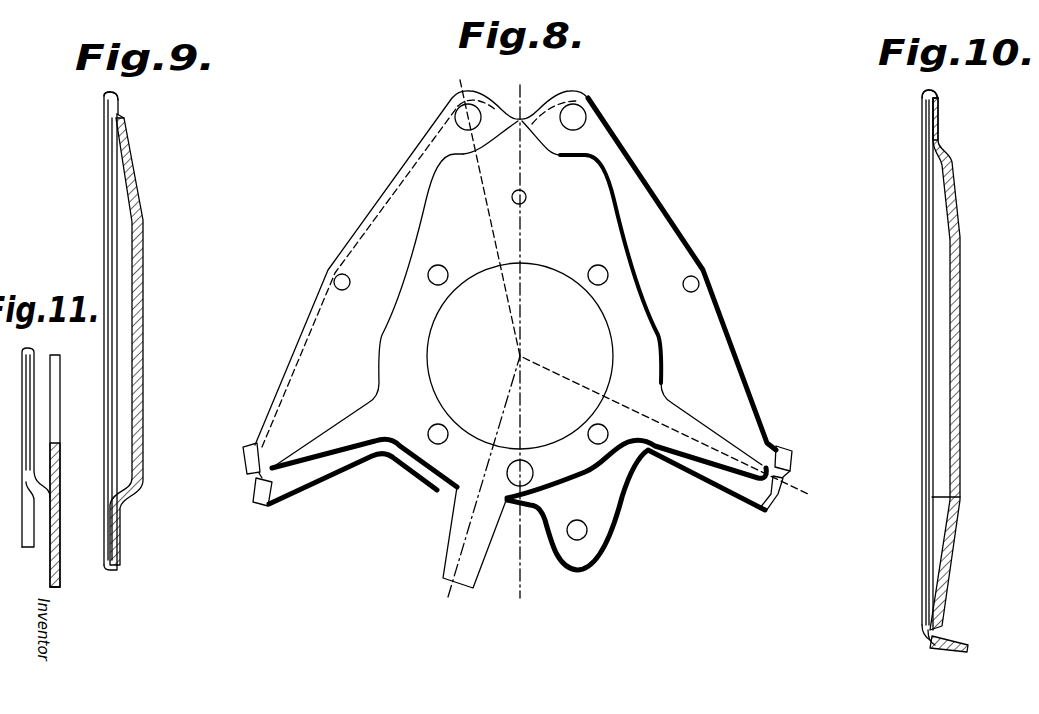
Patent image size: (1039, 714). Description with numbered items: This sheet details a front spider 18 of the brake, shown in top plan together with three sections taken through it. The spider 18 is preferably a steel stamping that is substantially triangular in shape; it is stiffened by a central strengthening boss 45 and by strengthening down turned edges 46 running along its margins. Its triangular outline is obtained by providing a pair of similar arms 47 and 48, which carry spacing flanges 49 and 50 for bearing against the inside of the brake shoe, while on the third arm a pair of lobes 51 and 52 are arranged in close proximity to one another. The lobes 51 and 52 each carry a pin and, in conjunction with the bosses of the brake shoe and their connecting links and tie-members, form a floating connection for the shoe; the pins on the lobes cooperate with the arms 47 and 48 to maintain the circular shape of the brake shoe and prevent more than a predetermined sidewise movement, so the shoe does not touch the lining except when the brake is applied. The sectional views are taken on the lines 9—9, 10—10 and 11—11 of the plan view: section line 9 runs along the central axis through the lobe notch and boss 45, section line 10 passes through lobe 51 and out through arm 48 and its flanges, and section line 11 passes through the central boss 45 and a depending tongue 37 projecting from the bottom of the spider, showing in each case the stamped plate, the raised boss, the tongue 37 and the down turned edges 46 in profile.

In FIG. 8, the section line 9— 9 is at (536, 85).
In FIG. 8, the section line 10— 10 is at (473, 77).
In FIG. 8, the section line 11— 11 is at (511, 437).
In FIG. 8, the spider 18 is at (652, 236).
In FIG. 9, the spider 18 is at (103, 213).
In FIG. 11, the spider 18 is at (37, 360).
In FIG. 10, the spider 18 is at (930, 310).
In FIG. 8, the depending tongue 37 is at (457, 527).
In FIG. 11, the depending tongue 37 is at (62, 578).
In FIG. 8, the central strengthening boss 45 is at (643, 372).
In FIG. 9, the central strengthening boss 45 is at (133, 152).
In FIG. 11, the central strengthening boss 45 is at (78, 410).
In FIG. 10, the central strengthening boss 45 is at (960, 230).
In FIG. 8, the down turned edges 46 is at (755, 385).
In FIG. 9, the down turned edges 46 is at (108, 121).
In FIG. 10, the down turned edges 46 is at (922, 92).
In FIG. 8, the arm 47 is at (260, 441).
In FIG. 8, the arm 48 is at (780, 445).
In FIG. 10, the arm 48 is at (930, 634).
In FIG. 8, the spacing flange 49 is at (244, 461).
In FIG. 10, the spacing flange 49 is at (958, 643).
In FIG. 8, the spacing flange 50 is at (264, 497).
In FIG. 8, the lobe 51 is at (452, 112).
In FIG. 10, the lobe 51 is at (938, 101).
In FIG. 8, the lobe 52 is at (590, 115).
In FIG. 9, the lobe 52 is at (121, 104).